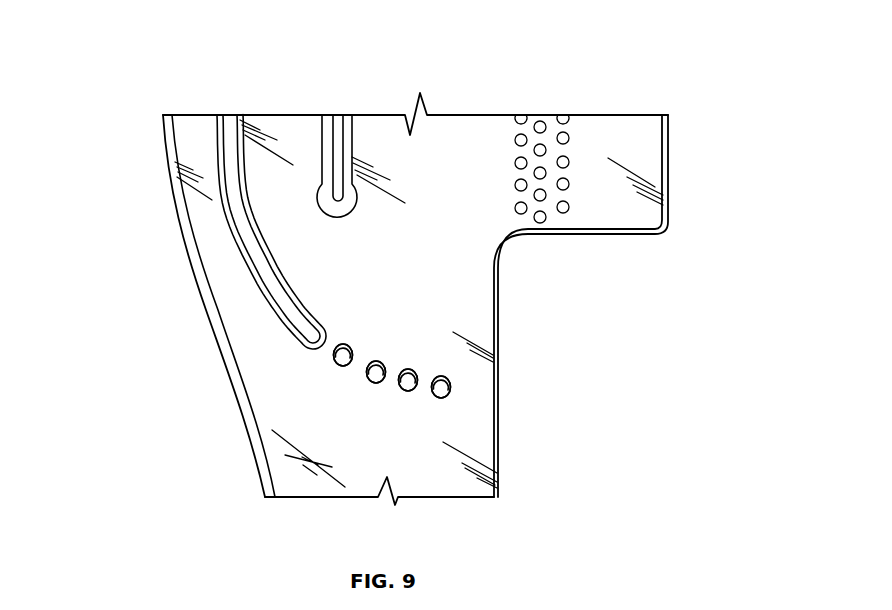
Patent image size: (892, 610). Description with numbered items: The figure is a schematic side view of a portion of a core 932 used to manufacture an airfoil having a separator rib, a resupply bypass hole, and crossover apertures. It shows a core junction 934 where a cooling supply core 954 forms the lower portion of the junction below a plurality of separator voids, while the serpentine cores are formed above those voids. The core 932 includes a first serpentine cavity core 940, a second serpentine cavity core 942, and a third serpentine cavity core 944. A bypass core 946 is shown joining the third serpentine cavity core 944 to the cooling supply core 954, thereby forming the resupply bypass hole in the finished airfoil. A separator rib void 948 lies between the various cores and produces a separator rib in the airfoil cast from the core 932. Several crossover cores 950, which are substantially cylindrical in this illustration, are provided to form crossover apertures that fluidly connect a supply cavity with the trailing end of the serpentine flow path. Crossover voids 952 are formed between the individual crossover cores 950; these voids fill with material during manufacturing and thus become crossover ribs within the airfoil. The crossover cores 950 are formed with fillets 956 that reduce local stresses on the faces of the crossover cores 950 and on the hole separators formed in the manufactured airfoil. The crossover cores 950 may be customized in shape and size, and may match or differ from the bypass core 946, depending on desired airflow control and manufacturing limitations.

The core 932 is at (170, 134).
The core junction 934 is at (507, 361).
The first serpentine cavity core 940 is at (217, 283).
The second serpentine cavity core 942 is at (297, 132).
The third serpentine cavity core 944 is at (478, 133).
The bypass core 946 is at (470, 383).
The separator rib void 948 is at (228, 139).
The crossover cores 950 is at (336, 344).
The crossover voids 952 is at (440, 399).
The cooling supply core 954 is at (288, 465).
The fillets 956 is at (320, 313).